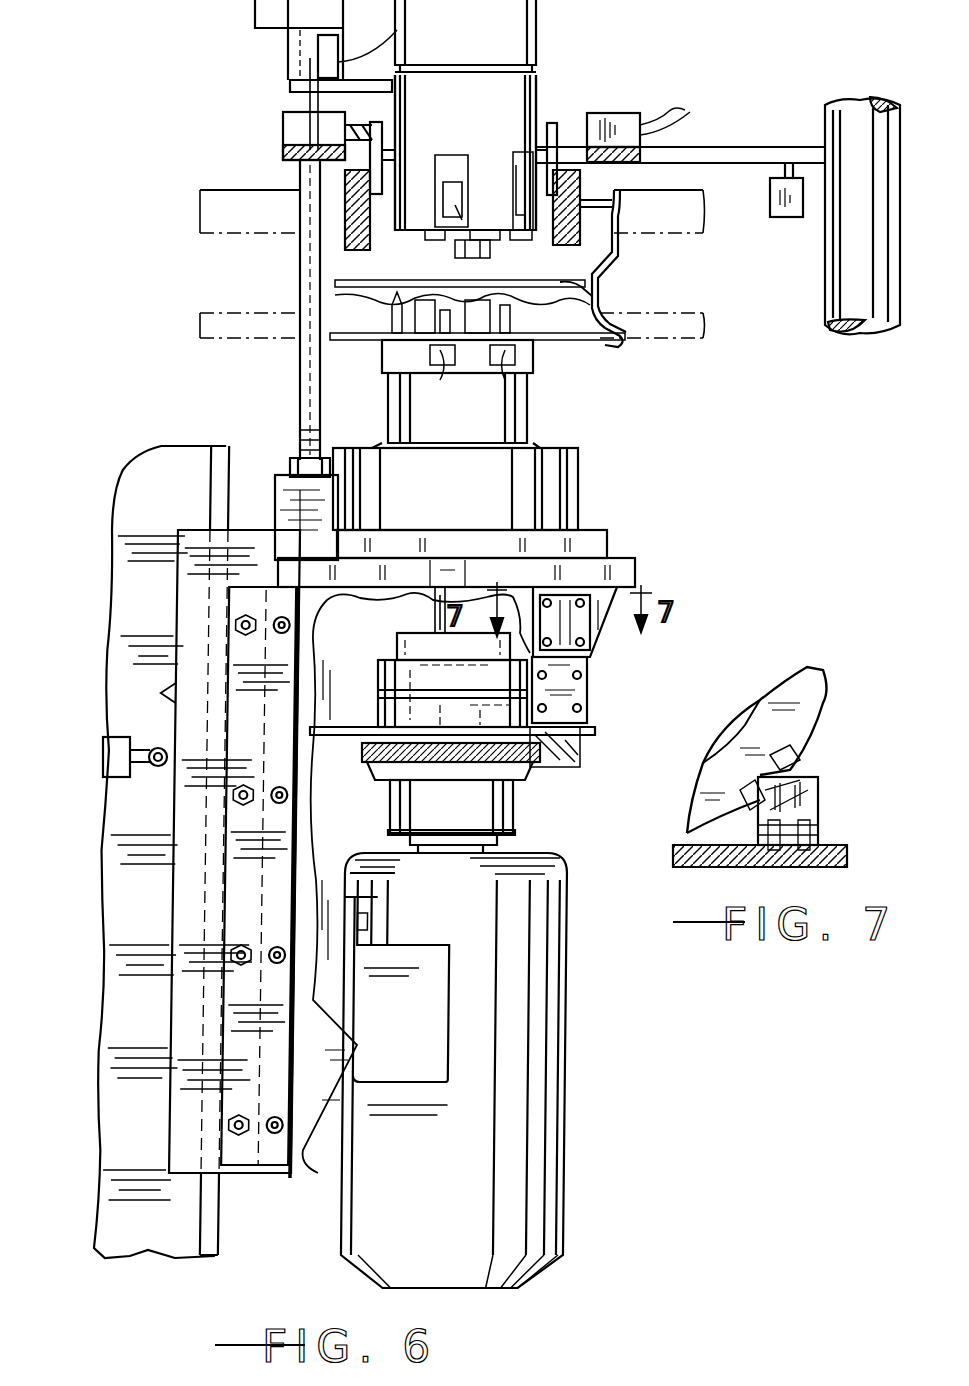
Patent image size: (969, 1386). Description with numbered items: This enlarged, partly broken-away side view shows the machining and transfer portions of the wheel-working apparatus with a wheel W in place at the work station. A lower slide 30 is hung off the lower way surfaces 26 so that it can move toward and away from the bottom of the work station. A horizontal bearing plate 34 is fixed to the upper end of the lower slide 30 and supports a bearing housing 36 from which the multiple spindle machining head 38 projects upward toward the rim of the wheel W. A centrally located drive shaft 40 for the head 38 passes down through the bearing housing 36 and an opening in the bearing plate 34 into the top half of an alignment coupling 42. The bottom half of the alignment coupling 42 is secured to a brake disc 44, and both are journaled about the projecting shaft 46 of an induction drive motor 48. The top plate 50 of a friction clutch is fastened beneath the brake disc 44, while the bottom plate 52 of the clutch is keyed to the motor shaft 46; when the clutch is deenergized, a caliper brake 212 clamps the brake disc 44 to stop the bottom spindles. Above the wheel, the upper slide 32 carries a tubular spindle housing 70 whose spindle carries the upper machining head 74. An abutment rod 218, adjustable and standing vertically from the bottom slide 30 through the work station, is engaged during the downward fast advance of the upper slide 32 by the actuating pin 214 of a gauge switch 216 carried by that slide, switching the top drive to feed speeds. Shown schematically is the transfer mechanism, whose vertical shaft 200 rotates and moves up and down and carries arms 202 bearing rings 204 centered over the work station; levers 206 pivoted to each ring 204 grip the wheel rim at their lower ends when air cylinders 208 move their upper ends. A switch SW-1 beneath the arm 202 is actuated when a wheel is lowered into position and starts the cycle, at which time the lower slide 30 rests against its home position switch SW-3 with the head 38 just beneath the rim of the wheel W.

In FIG. 6, the way surfaces 26 is at (230, 1202).
In FIG. 6, the lower slide 30 is at (245, 540).
In FIG. 6, the upper slide 32 is at (300, 12).
In FIG. 6, the horizontal bearing plate 34 is at (636, 568).
In FIG. 6, the bearing housing 36 is at (560, 478).
In FIG. 6, the multiple spindle machining head 38 is at (515, 410).
In FIG. 6, the drive shaft 40 is at (445, 585).
In FIG. 6, the alignment coupling 42 is at (382, 710).
In FIG. 6, the brake disc 44 is at (595, 733).
In FIG. 7, the brake disc 44 is at (825, 690).
In FIG. 6, the motor shaft 46 is at (500, 805).
In FIG. 6, the induction drive motor 48 is at (468, 1166).
In FIG. 6, the top plate of friction clutch 50 is at (545, 762).
In FIG. 6, the bottom plate of friction clutch 52 is at (530, 765).
In FIG. 6, the spindle housing 70 is at (572, 14).
In FIG. 6, the upper machining head 74 is at (538, 92).
In FIG. 6, the vertical shaft 200 is at (884, 227).
In FIG. 6, the arms 202 is at (790, 160).
In FIG. 6, the rings 204 is at (630, 175).
In FIG. 6, the levers 206 is at (545, 178).
In FIG. 6, the air cylinders 208 is at (615, 112).
In FIG. 6, the caliper brake 212 is at (570, 712).
In FIG. 7, the caliper brake 212 is at (820, 805).
In FIG. 6, the actuating pin 214 is at (305, 100).
In FIG. 6, the gauge switch 216 is at (310, 50).
In FIG. 6, the abutment rod 218 is at (297, 390).
In FIG. 6, the switch SW-1 is at (786, 217).
In FIG. 6, the home position switch SW-3 is at (105, 815).
In FIG. 6, the wheel W is at (608, 266).